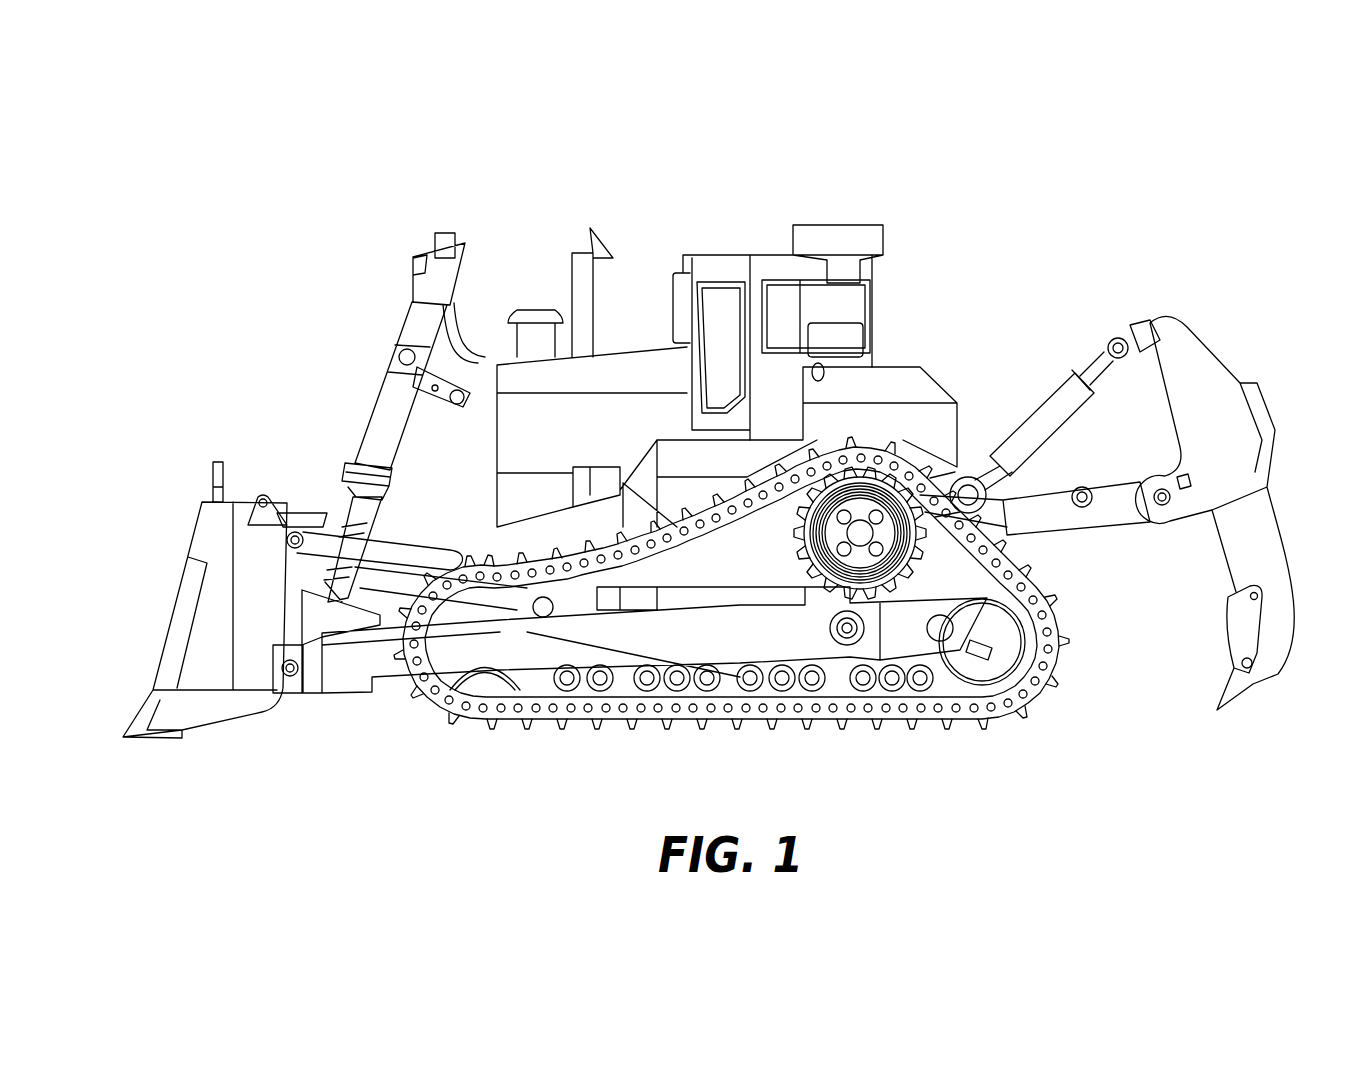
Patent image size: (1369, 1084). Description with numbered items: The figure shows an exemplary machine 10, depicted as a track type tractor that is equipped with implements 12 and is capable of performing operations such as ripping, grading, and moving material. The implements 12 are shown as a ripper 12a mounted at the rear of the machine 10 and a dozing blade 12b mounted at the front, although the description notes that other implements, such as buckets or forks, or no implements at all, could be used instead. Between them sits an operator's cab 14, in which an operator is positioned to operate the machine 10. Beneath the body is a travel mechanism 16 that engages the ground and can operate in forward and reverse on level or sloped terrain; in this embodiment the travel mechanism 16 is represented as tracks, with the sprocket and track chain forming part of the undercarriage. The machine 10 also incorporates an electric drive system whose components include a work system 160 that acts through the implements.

The machine 10 is at (1060, 206).
The implements 12 is at (217, 421).
The ripper 12a is at (1272, 512).
The dozing blade 12b is at (183, 572).
The operator's cab 14 is at (873, 310).
The travel mechanism 16 is at (735, 725).
The work system 160 is at (996, 741).